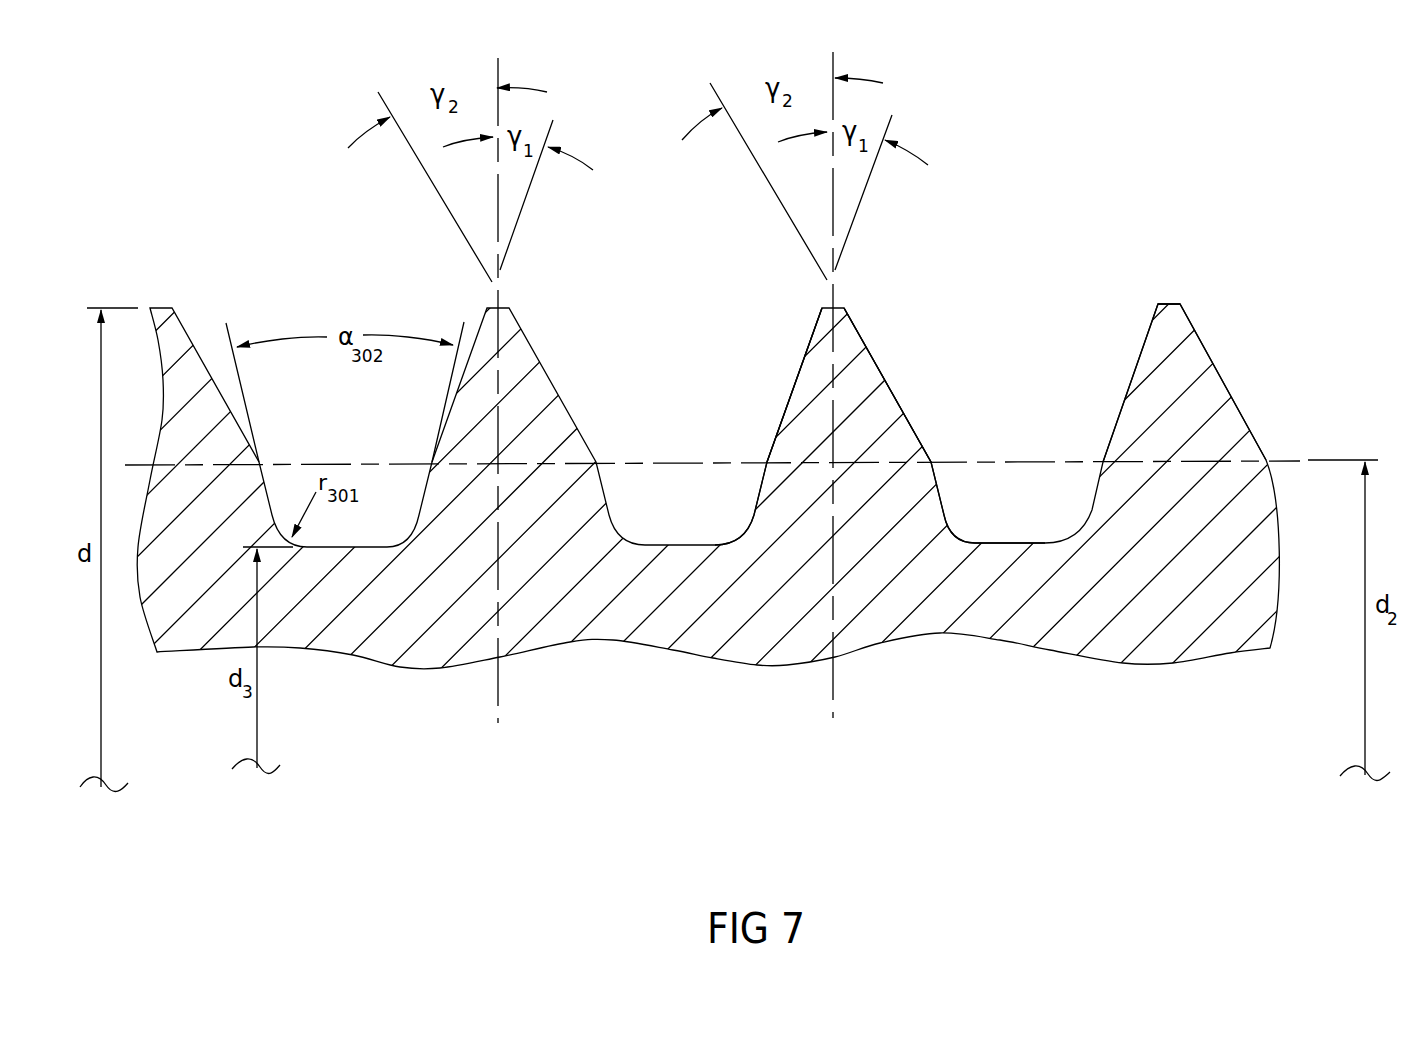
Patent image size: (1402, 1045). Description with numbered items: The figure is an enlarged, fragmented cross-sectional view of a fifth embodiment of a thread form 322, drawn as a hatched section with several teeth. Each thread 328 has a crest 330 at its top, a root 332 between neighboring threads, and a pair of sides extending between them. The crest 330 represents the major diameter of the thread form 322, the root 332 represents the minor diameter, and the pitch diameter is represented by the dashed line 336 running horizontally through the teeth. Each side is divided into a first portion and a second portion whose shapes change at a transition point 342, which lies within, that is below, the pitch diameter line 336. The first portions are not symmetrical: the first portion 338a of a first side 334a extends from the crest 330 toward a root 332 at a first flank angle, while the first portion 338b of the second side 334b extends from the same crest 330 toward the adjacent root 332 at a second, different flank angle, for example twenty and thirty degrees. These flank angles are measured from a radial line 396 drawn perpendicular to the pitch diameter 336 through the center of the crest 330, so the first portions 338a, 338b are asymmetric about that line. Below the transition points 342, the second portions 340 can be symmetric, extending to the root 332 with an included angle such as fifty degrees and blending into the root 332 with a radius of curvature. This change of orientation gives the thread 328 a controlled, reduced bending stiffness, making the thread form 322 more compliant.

The thread form 322 is at (203, 178).
The thread 328 is at (1207, 360).
The crest 330 is at (1170, 300).
The root 332 is at (1027, 543).
The first side 334a is at (865, 342).
The second side 334b is at (810, 333).
The pitch diameter line 336 is at (1325, 458).
The first portion of first side 338a is at (910, 413).
The first portion of second side 338b is at (795, 375).
The second portion 340 is at (760, 497).
The transition point 342 is at (763, 458).
The radial line 396 is at (835, 702).